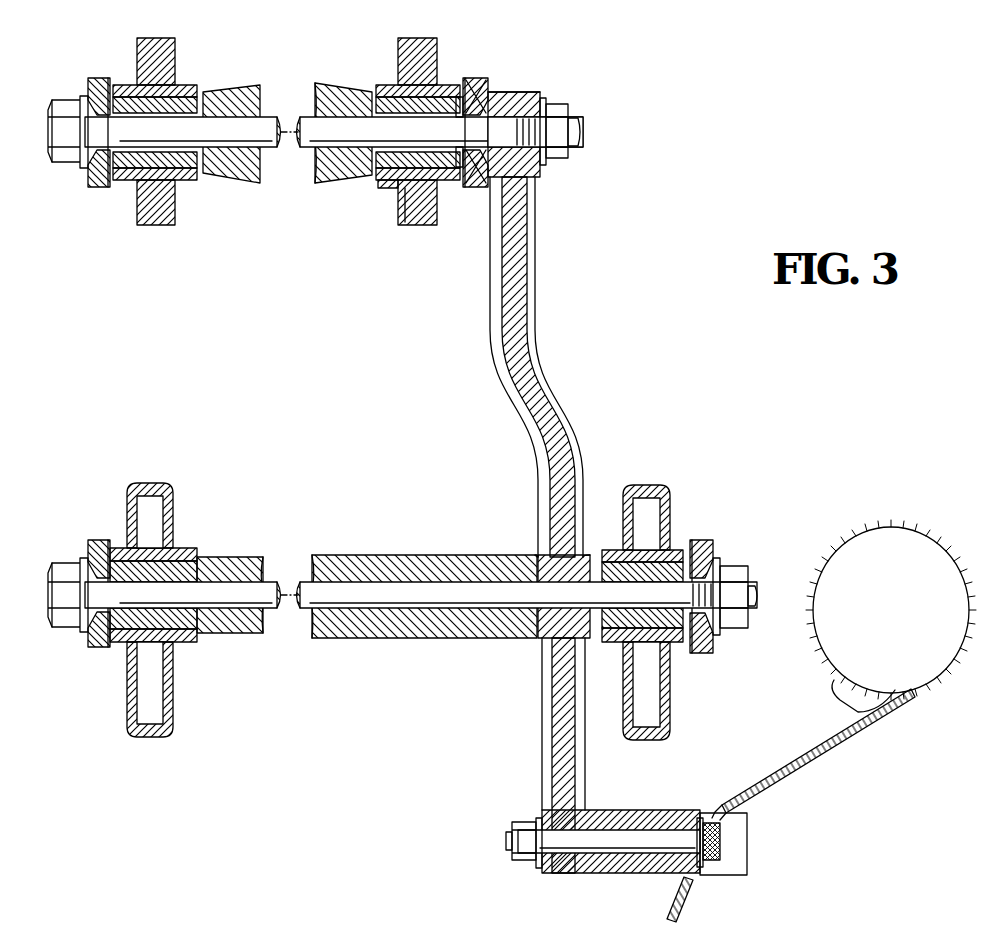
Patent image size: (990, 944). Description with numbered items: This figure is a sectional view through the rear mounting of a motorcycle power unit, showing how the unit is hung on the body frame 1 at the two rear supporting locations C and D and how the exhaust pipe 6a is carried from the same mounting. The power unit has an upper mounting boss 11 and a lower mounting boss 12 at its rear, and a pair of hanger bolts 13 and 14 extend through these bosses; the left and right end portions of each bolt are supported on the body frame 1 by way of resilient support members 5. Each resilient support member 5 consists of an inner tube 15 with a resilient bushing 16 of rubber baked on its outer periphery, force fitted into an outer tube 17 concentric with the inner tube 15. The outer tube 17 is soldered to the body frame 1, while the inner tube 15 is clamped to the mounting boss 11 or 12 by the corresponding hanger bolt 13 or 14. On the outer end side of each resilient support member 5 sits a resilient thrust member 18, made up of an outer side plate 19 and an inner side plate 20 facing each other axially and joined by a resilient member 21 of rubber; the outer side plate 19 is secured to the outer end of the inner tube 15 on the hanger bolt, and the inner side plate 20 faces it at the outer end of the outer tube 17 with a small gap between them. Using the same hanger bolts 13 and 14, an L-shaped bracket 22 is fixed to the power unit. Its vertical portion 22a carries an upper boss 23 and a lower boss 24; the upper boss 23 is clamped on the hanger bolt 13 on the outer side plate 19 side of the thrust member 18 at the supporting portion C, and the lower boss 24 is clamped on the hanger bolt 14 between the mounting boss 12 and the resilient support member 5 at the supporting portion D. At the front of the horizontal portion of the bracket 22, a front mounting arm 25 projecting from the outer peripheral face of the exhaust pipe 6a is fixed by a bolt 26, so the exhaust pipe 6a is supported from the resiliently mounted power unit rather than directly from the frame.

The body frame 1 is at (175, 51).
The resilient support member 5 is at (126, 186).
The exhaust pipe 6a is at (890, 527).
The upper mounting boss 11 is at (318, 84).
The lower mounting boss 12 is at (331, 638).
The hanger bolt 13 is at (581, 131).
The hanger bolt 14 is at (758, 600).
The inner tube 15 is at (449, 172).
The resilient bushing 16 is at (408, 222).
The outer tube 17 is at (388, 182).
The resilient thrust member 18 is at (94, 78).
The outer side plate 19 is at (530, 92).
The inner side plate 20 is at (479, 88).
The resilient member 21 is at (480, 184).
The bracket 22 is at (558, 310).
The vertical portion 22a is at (523, 366).
The upper boss 23 is at (538, 172).
The lower boss 24 is at (546, 640).
The front mounting arm 25 is at (815, 753).
The bolt 26 is at (722, 841).
The rear location C is at (648, 133).
The rear location D is at (698, 470).